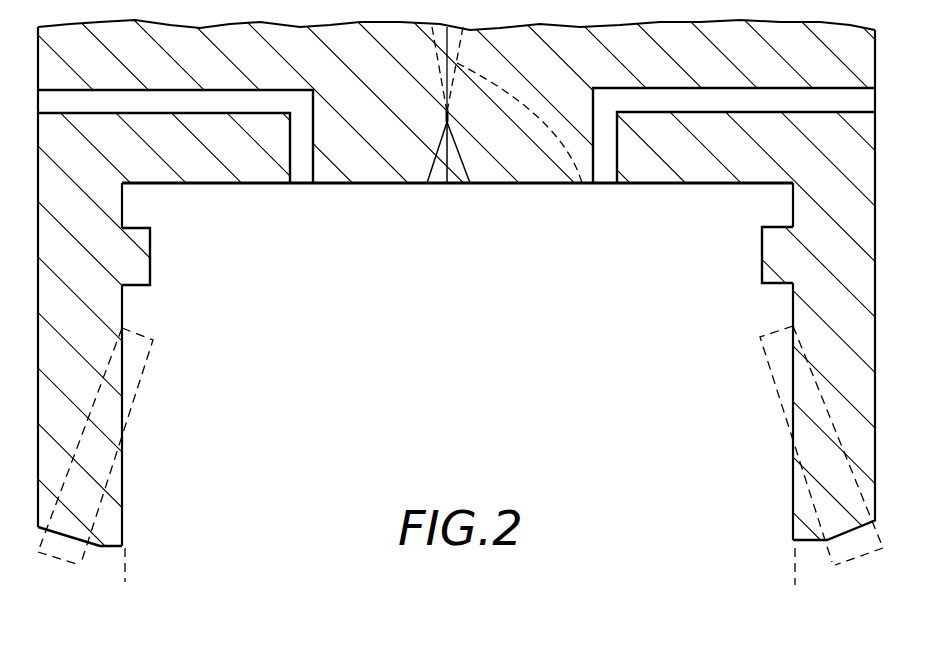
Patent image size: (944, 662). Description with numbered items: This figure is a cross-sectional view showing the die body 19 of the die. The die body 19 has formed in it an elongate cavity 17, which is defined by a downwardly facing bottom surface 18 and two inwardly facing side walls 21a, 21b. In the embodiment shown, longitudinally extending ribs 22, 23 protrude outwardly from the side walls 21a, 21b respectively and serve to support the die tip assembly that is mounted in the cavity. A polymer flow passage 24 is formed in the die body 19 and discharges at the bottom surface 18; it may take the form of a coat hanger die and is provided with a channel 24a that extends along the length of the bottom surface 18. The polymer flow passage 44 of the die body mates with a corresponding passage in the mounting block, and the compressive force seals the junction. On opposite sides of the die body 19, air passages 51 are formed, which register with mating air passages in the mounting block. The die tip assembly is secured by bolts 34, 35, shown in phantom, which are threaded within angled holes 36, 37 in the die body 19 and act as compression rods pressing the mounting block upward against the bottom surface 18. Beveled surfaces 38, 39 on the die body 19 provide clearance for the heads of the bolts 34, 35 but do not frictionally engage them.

The cavity 17 is at (450, 297).
The bottom surface 18 is at (368, 187).
The die body 19 is at (793, 528).
The side wall 21a is at (793, 306).
The side wall 21b is at (123, 305).
The rib 22 is at (762, 268).
The rib 23 is at (150, 262).
The polymer flow passage 24 is at (453, 159).
The channel 24a is at (450, 187).
The bolt 34 is at (773, 380).
The bolt 35 is at (150, 368).
The angled hole 36 is at (845, 465).
The angled hole 37 is at (70, 492).
The beveled surface 38 is at (828, 545).
The beveled surface 39 is at (88, 537).
The polymer flow passage 44 is at (582, 183).
The air passage 51 is at (233, 103).